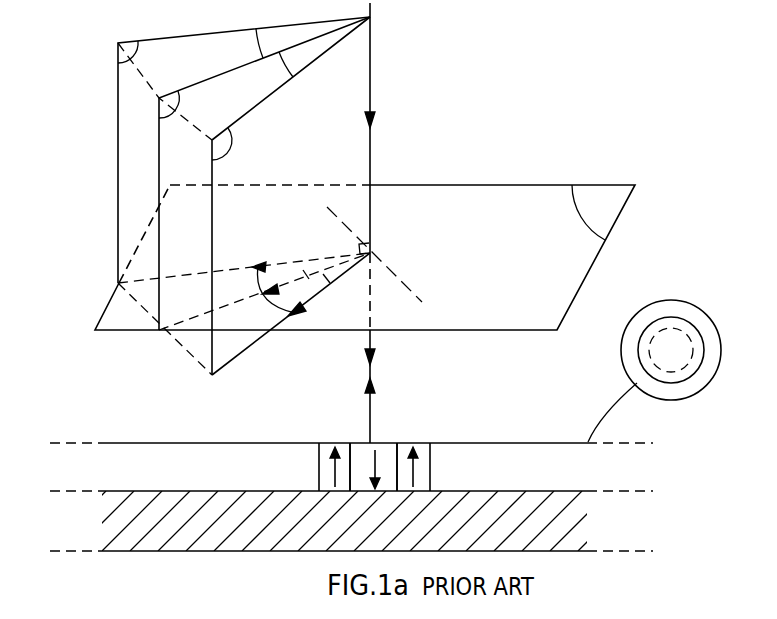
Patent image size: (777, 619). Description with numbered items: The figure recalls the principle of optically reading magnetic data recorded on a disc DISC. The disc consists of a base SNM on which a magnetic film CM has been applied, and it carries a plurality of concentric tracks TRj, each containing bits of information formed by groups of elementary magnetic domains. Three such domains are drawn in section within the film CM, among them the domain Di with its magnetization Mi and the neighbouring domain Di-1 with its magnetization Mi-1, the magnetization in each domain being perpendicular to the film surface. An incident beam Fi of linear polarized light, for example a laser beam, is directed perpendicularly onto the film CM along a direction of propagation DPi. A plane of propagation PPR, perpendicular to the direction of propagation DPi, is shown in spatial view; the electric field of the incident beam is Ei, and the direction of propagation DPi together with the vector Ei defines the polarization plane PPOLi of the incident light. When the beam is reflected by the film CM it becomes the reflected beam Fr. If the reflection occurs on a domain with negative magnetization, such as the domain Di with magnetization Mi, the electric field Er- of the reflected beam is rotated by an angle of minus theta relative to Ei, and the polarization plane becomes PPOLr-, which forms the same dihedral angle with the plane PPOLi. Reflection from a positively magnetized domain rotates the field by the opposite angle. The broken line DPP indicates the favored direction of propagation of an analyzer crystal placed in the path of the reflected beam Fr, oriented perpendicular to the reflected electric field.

The direction of propagation DPi is at (393, 223).
The incident beam Fi is at (375, 257).
The reflected beam Fr is at (385, 362).
The plane of polarization of the incident beam PPOLi is at (264, 173).
The plane of polarization of the reflected beam PPOLr- is at (291, 196).
The plane of propagation PPR is at (365, 255).
The electric field of the incident beam Ei is at (264, 291).
The electric field of the reflected beam Er- is at (291, 314).
The point of incidence O is at (376, 252).
The favored direction of propagation DPP is at (399, 259).
The disc DISC is at (672, 400).
The track TRj is at (660, 317).
The magnetic film CM is at (532, 455).
The base SNM is at (104, 538).
The elementary magnetic domain Di is at (373, 453).
The elementary magnetic domain Di-1 is at (405, 443).
The magnetization vector Mi is at (366, 467).
The magnetization vector Mi-1 is at (429, 476).